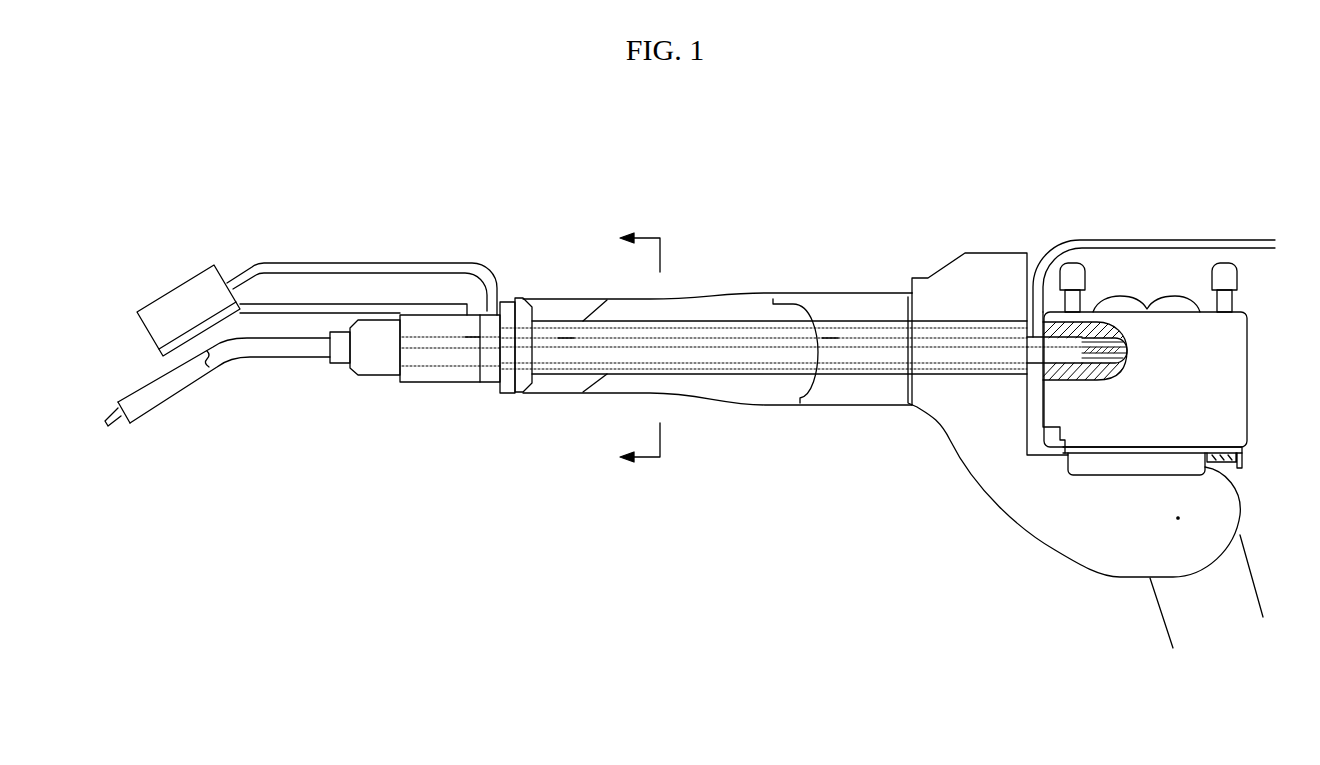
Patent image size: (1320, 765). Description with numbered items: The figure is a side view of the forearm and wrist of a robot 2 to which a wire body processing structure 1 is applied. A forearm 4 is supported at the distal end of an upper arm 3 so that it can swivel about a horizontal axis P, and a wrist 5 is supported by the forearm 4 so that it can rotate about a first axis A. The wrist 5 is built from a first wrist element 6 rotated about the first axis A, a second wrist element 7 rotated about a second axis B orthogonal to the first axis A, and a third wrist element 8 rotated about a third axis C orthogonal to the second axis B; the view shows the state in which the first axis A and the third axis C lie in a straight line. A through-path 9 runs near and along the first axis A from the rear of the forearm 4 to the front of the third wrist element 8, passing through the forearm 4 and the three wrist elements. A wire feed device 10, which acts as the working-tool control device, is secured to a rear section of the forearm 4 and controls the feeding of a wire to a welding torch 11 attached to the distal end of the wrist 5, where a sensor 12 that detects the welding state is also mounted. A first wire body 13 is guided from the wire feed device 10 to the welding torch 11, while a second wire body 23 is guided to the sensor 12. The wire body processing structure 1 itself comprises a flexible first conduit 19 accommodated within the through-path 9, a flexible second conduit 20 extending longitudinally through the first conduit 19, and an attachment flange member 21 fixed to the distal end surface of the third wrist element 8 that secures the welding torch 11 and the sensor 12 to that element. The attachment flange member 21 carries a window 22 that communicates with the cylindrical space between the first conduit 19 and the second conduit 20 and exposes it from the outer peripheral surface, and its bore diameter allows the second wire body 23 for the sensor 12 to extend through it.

The wire body processing structure 1 is at (518, 425).
The robot 2 is at (1090, 104).
The upper arm 3 is at (1242, 553).
The forearm 4 is at (987, 252).
The wrist 5 is at (702, 250).
The first wrist element 6 is at (837, 293).
The second wrist element 7 is at (553, 299).
The third wrist element 8 is at (505, 308).
The through-path 9 is at (857, 358).
The wire feed device 10 is at (1255, 380).
The welding torch 11 is at (376, 377).
The sensor 12 is at (167, 290).
The wire body 13 is at (1120, 381).
The first conduit 19 is at (697, 378).
The second conduit 20 is at (1038, 370).
The attachment flange member 21 is at (486, 385).
The window 22 is at (490, 302).
The wire body 23 is at (1066, 240).
The first axis A is at (830, 350).
The second axis B is at (565, 350).
The third axis C is at (472, 350).
The horizontal axis P is at (1184, 516).